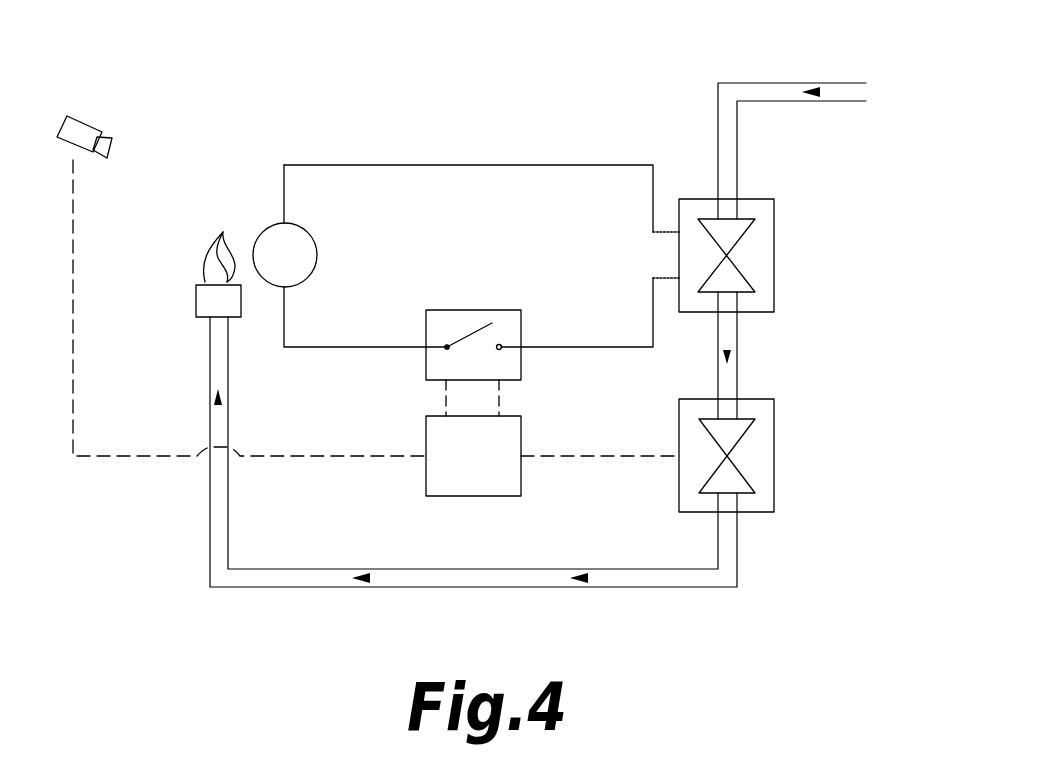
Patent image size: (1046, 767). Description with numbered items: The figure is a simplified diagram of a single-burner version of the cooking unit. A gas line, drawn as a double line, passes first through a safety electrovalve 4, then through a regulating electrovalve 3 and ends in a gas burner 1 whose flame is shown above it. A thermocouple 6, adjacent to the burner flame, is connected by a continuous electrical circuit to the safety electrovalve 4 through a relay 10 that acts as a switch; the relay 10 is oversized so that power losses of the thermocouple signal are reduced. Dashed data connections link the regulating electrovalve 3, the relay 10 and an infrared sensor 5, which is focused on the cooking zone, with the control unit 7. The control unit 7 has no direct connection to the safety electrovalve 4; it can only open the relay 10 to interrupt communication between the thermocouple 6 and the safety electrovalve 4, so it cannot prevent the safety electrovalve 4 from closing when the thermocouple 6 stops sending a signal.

The gas burner 1 is at (196, 299).
The regulating electrovalve 3 is at (774, 455).
The safety electrovalve 4 is at (774, 254).
The infrared sensor 5 is at (90, 124).
The thermocouple 6 is at (285, 255).
The control device 7 is at (473, 456).
The relay 10 is at (473, 310).